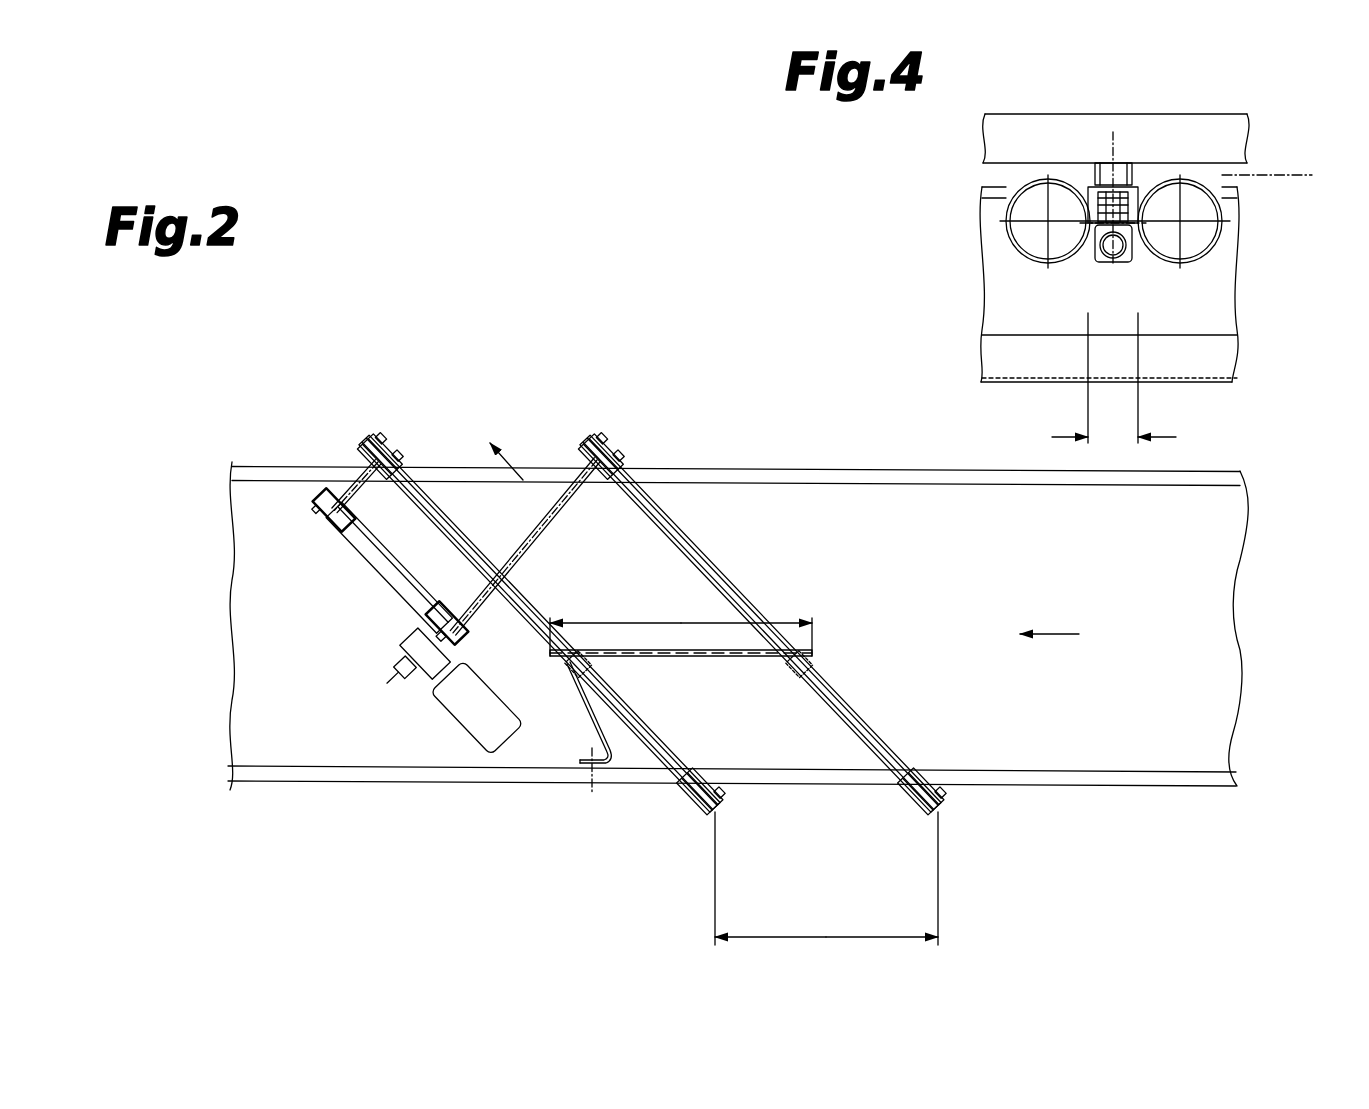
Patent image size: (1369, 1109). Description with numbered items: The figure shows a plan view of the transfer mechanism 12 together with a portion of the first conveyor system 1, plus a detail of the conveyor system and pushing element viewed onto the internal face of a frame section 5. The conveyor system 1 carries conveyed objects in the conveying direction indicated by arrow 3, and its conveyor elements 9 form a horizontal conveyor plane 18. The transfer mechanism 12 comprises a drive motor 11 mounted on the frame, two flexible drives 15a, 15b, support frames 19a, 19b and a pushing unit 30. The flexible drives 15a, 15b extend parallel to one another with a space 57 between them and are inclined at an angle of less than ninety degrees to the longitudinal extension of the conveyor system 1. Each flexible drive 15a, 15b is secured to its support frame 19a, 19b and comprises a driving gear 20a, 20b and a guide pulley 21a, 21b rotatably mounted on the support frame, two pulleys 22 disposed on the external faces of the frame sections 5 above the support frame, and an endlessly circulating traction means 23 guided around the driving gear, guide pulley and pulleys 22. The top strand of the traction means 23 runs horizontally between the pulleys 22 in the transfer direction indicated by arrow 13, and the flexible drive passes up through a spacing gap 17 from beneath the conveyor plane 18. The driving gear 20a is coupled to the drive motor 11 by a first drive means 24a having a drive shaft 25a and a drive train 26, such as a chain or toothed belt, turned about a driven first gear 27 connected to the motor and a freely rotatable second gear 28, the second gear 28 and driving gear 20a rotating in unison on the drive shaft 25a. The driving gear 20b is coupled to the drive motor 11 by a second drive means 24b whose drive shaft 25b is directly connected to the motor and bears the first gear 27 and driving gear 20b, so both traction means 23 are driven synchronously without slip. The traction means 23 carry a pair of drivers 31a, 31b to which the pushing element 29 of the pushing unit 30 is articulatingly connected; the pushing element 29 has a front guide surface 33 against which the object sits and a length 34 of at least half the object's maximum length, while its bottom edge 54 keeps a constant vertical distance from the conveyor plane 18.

In FIG. 2, the first conveyor system 1 is at (1282, 432).
In FIG. 2, the conveying direction arrow 3 is at (1062, 632).
In FIG. 2, the frame section 5 is at (1240, 472).
In FIG. 4, the frame section 5 is at (1222, 318).
In FIG. 4, the conveyor elements 9 is at (1010, 237).
In FIG. 2, the drive motor 11 is at (470, 740).
In FIG. 2, the transfer mechanism 12 is at (488, 318).
In FIG. 2, the transfer direction arrow 13 is at (524, 478).
In FIG. 2, the first flexible drive 15a is at (724, 824).
In FIG. 4, the first flexible drive 15a is at (1075, 270).
In FIG. 2, the second flexible drive 15b is at (955, 830).
In FIG. 4, the spacing gap 17 is at (1172, 437).
In FIG. 4, the conveyor plane 18 is at (1290, 170).
In FIG. 2, the first support frame 19a is at (650, 745).
In FIG. 2, the second support frame 19b is at (690, 525).
In FIG. 2, the driving gear of first flexible drive 20a is at (394, 447).
In FIG. 2, the driving gear of second flexible drive 20b is at (613, 450).
In FIG. 2, the guide pulley of first flexible drive 21a is at (680, 797).
In FIG. 2, the guide pulley of second flexible drive 21b is at (905, 797).
In FIG. 2, the pulleys 22 is at (371, 440).
In FIG. 2, the traction means 23 is at (402, 466).
In FIG. 2, the first drive means 24a is at (318, 470).
In FIG. 2, the second drive means 24b is at (553, 540).
In FIG. 2, the first drive shaft 25a is at (362, 470).
In FIG. 2, the second drive shaft 25b is at (582, 470).
In FIG. 2, the drive train 26 is at (372, 550).
In FIG. 2, the first gear 27 is at (440, 620).
In FIG. 2, the second gear 28 is at (333, 522).
In FIG. 2, the pushing element 29 is at (720, 656).
In FIG. 4, the pushing element 29 is at (1185, 127).
In FIG. 2, the pushing unit 30 is at (828, 654).
In FIG. 2, the first driver 31a is at (578, 670).
In FIG. 2, the second driver 31b is at (795, 676).
In FIG. 2, the guide surface 33 is at (656, 655).
In FIG. 2, the length of pushing element 34 is at (628, 622).
In FIG. 4, the bottom edge of pushing element 54 is at (1005, 165).
In FIG. 2, the space between flexible drives 57 is at (818, 934).